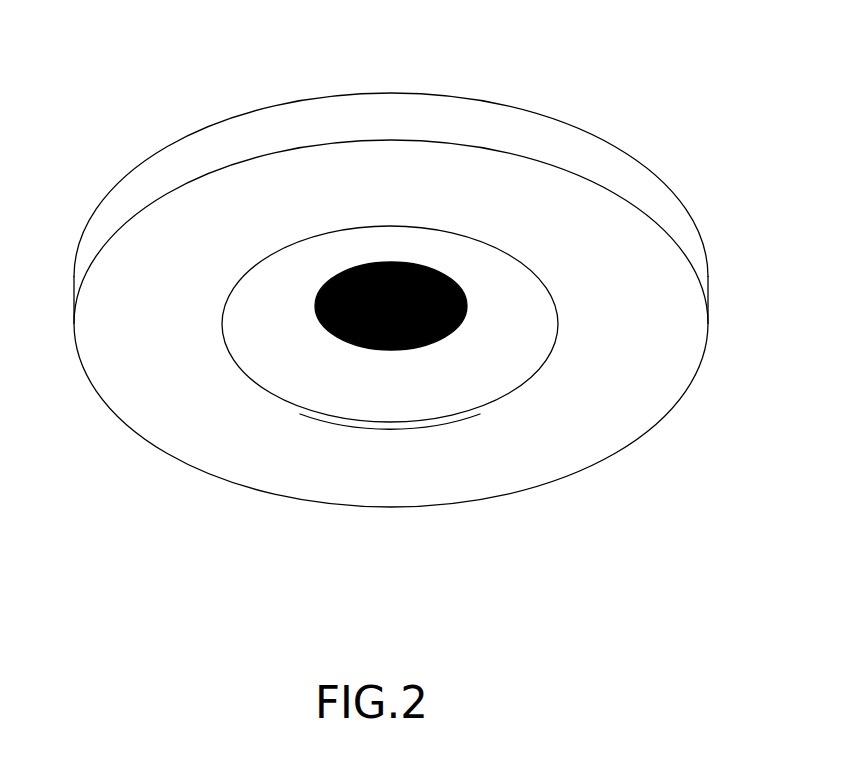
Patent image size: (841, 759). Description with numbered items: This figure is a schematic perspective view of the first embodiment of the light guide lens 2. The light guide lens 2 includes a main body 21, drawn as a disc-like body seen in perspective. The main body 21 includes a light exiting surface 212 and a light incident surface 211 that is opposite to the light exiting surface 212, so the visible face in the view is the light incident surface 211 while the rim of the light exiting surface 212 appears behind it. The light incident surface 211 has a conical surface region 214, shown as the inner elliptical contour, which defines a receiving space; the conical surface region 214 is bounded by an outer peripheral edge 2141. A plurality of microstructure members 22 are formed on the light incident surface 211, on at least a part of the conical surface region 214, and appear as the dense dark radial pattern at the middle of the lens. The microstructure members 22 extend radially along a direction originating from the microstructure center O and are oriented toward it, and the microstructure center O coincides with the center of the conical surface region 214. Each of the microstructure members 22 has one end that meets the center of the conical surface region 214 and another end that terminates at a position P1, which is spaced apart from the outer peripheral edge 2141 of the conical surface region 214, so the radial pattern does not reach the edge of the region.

The light guide lens 2 is at (123, 147).
The main body 21 is at (288, 118).
The light incident surface 211 is at (442, 445).
The light exiting surface 212 is at (470, 98).
The conical surface region 214 is at (493, 330).
The outer peripheral edge 2141 is at (390, 422).
The microstructure members 22 is at (342, 342).
The microstructure center O is at (373, 262).
The position P1 is at (380, 338).